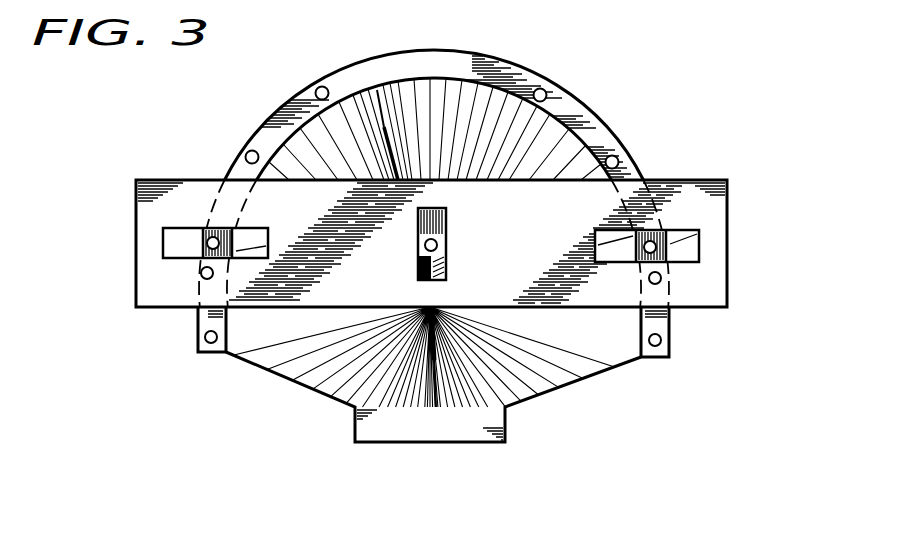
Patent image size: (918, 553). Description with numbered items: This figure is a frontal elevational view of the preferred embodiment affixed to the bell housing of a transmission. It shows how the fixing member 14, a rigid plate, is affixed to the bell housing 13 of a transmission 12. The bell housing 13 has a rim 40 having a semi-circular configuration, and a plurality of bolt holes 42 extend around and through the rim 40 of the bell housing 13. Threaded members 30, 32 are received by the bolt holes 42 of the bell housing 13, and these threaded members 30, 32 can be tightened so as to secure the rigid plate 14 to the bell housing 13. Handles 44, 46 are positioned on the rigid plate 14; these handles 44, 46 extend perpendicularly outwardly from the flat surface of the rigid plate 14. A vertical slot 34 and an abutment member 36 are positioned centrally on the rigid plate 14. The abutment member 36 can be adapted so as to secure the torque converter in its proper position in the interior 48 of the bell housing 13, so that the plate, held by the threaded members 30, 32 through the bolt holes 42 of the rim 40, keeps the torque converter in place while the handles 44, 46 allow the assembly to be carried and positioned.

The transmission 12 is at (357, 432).
The bell housing 13 is at (582, 117).
The fixing member 14 is at (712, 181).
The threaded member 30 is at (170, 237).
The threaded member 32 is at (665, 240).
The vertical slot 34 is at (446, 213).
The abutment member 36 is at (423, 250).
The rim 40 is at (272, 124).
The bolt holes 42 is at (316, 92).
The handle 44 is at (662, 283).
The handle 46 is at (200, 273).
The interior 48 is at (448, 137).